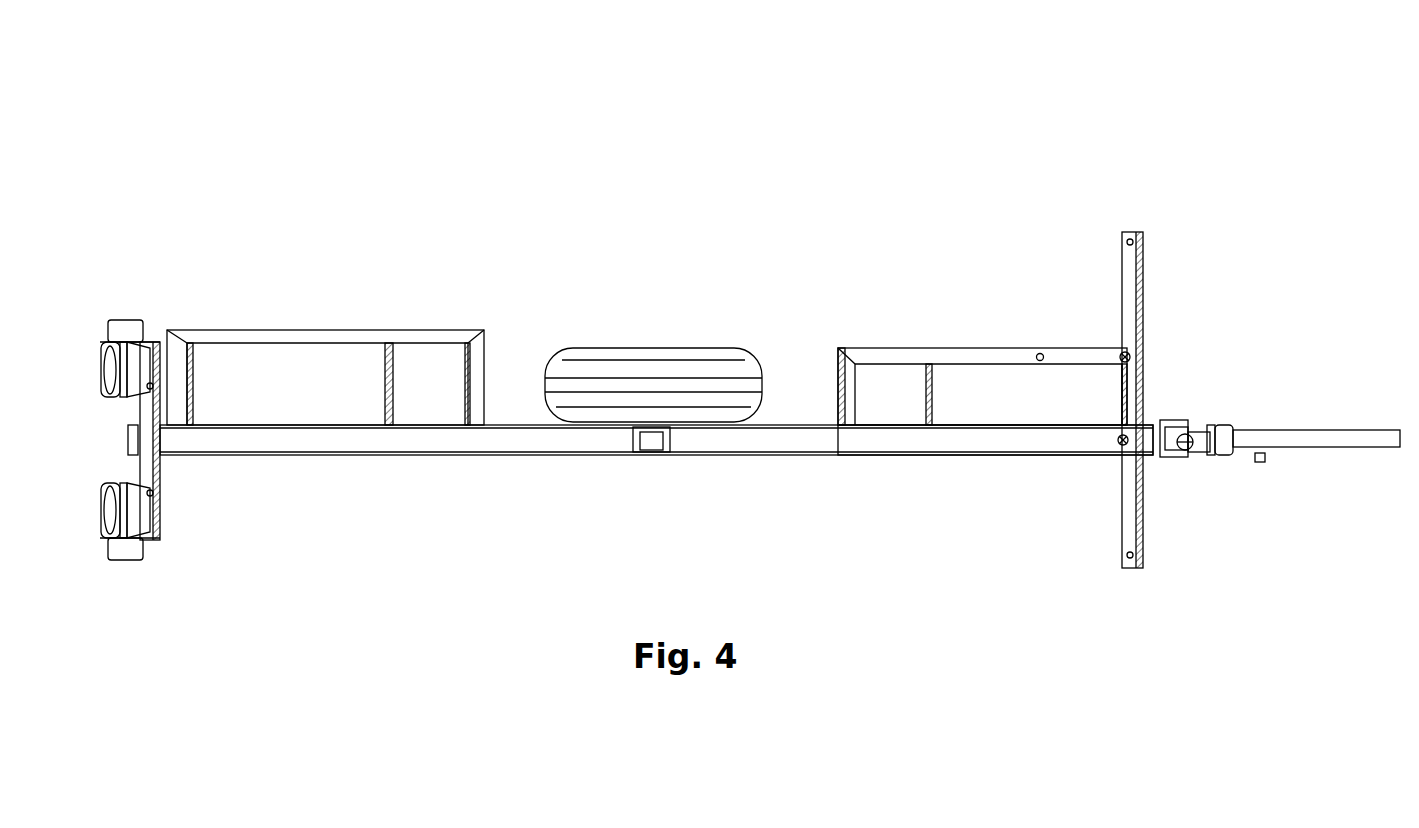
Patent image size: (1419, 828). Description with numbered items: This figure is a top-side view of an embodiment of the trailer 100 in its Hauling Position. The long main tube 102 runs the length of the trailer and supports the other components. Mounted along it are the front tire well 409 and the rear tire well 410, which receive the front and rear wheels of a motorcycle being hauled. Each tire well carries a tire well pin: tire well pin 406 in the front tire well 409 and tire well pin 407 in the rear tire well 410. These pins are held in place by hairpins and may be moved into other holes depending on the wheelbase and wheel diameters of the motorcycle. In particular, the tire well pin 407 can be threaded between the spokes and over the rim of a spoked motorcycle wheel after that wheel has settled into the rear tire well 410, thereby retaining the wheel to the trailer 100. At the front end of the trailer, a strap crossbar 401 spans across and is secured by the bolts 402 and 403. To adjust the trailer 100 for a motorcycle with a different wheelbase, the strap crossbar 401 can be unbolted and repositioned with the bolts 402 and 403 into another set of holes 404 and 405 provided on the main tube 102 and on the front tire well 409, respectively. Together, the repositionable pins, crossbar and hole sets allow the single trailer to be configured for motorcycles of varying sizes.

The trailer 100 is at (464, 311).
The main tube 102 is at (656, 488).
The strap crossbar 401 is at (1266, 354).
The bolt 402 is at (1078, 474).
The bolt 403 is at (1143, 312).
The hole 404 is at (995, 463).
The hole 405 is at (995, 305).
The tire well pin 406 is at (872, 353).
The tire well pin 407 is at (451, 342).
The front tire well 409 is at (971, 314).
The rear tire well 410 is at (325, 318).